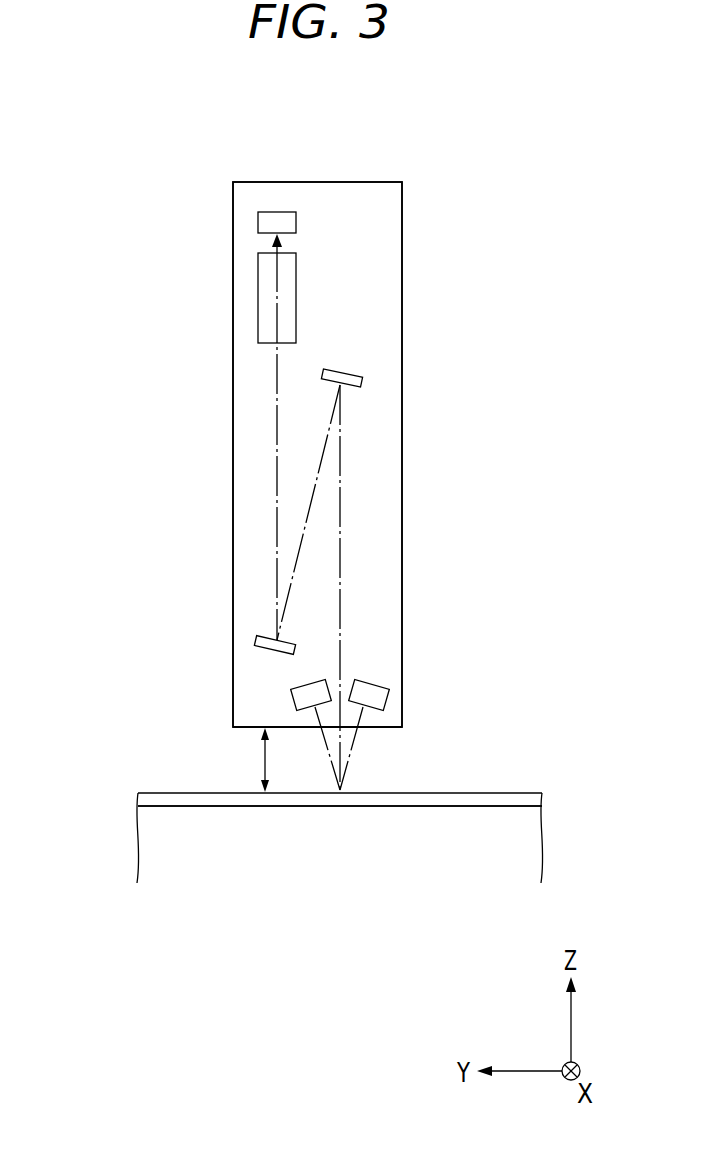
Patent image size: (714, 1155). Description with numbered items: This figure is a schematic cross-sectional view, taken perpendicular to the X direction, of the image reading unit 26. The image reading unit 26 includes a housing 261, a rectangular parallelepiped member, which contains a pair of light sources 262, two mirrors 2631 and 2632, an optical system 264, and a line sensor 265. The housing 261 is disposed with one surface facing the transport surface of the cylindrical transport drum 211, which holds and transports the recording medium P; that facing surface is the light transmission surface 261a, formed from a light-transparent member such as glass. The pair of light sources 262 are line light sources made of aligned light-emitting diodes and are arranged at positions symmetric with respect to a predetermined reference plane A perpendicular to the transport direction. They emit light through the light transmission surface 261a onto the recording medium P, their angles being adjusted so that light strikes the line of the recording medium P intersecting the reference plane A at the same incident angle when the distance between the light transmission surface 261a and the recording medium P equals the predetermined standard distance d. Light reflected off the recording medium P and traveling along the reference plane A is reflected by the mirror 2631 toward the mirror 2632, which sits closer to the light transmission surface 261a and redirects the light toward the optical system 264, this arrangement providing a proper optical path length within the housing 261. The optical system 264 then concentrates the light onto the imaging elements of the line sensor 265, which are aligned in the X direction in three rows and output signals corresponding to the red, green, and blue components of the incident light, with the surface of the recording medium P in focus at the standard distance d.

The image reading unit 26 is at (405, 130).
The housing 261 is at (402, 257).
The light transmission surface 261a is at (378, 728).
The light sources 262 is at (290, 697).
The mirror 2631 is at (360, 383).
The mirror 2632 is at (257, 642).
The optical system 264 is at (258, 296).
The line sensor 265 is at (258, 222).
The reference plane A is at (340, 595).
The standard distance d is at (273, 760).
The recording medium P is at (495, 793).
The transport drum 211 is at (165, 841).